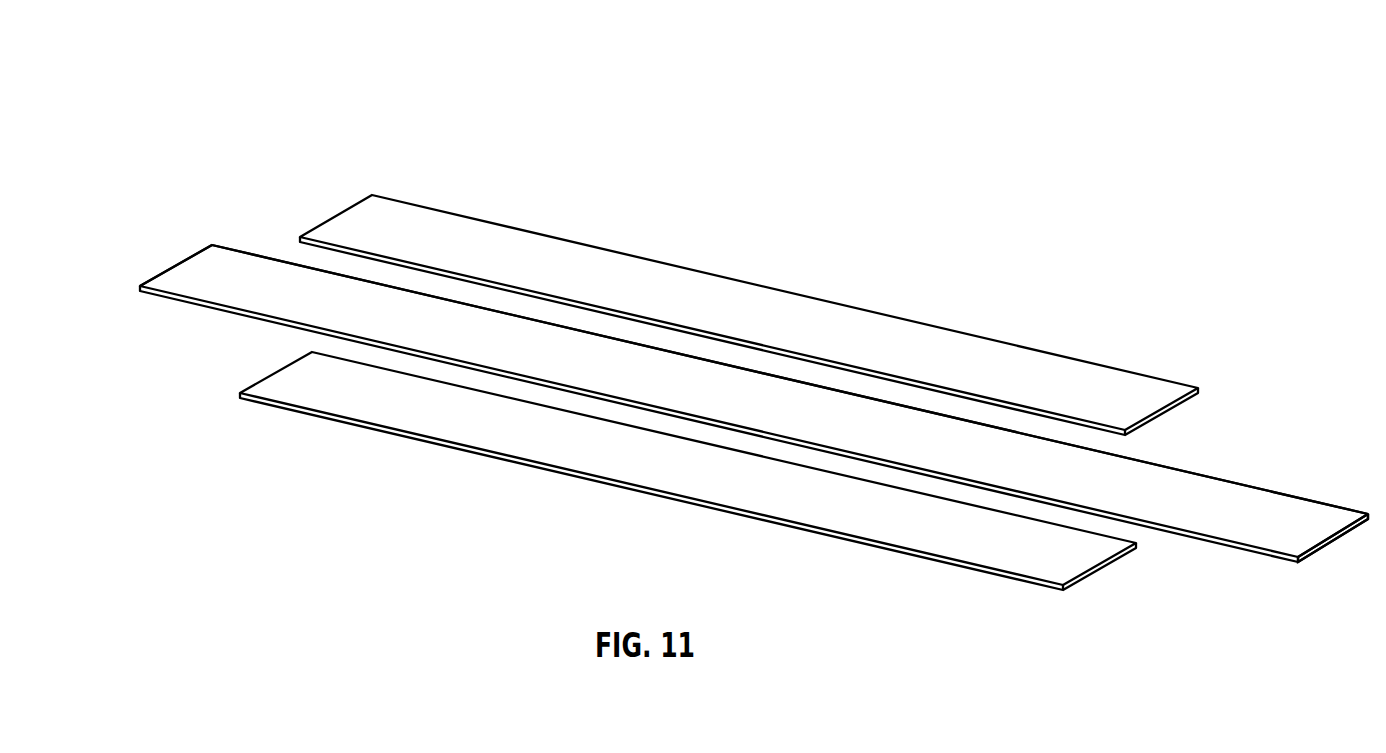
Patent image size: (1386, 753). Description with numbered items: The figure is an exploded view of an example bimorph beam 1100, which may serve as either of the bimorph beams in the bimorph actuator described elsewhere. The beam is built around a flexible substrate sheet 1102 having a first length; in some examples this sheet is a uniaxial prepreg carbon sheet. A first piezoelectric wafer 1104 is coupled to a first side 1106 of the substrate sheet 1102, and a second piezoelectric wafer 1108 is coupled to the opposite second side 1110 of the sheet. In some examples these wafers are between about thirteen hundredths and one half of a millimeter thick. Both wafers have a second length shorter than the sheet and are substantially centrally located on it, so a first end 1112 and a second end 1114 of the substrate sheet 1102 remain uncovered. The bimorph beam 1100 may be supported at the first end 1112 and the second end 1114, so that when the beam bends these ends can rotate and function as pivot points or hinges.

The bimorph beam 1100 is at (1098, 86).
The flexible substrate sheet 1102 is at (1304, 539).
The first piezoelectric wafer 1104 is at (281, 377).
The first side 1106 is at (179, 313).
The second piezoelectric wafer 1108 is at (533, 240).
The second side 1110 is at (1201, 471).
The first end 1112 is at (188, 260).
The second end 1114 is at (1333, 512).